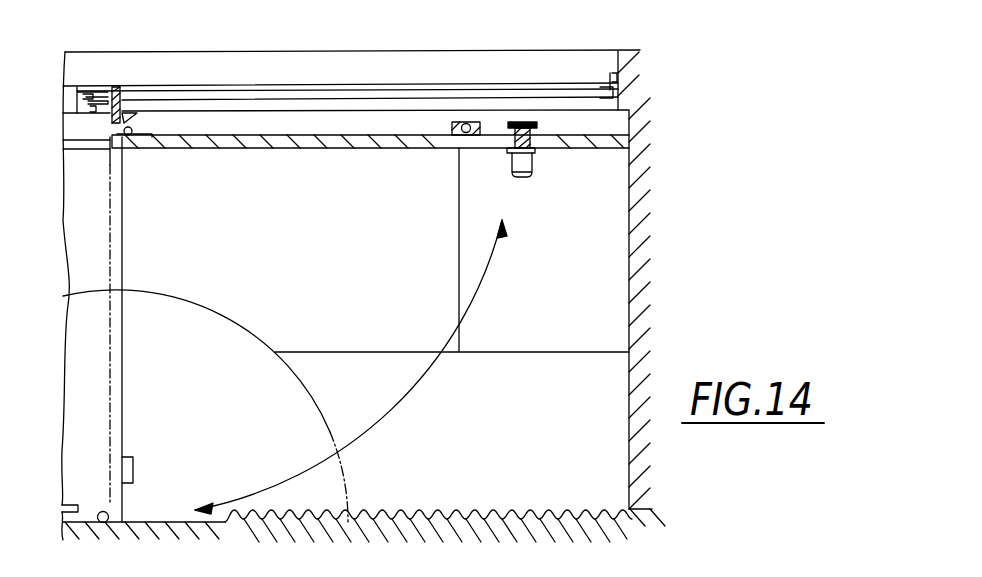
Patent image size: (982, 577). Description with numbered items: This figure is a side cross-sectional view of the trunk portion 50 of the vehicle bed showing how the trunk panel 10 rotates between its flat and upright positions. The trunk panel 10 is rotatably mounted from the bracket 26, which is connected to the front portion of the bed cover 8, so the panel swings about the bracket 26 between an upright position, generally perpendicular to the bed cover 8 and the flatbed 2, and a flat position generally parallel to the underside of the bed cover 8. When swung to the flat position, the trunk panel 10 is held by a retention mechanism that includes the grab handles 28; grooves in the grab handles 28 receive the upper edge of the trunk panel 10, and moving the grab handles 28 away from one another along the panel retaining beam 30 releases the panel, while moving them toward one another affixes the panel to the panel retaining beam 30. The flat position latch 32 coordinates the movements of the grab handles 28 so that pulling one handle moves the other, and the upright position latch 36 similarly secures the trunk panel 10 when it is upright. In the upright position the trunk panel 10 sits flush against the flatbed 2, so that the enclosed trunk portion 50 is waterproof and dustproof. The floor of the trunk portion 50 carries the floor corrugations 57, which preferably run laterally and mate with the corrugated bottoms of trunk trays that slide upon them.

The flatbed 2 is at (282, 525).
The bed cover 8 is at (97, 58).
The trunk panel 10 is at (123, 252).
The bracket 26 is at (121, 121).
The grab handles 28 is at (527, 177).
The panel retaining beam 30 is at (537, 141).
The flat position latch 32 is at (530, 122).
The upright position latch 36 is at (453, 121).
The trunk portion 50 is at (519, 287).
The floor corrugations 57 is at (502, 510).